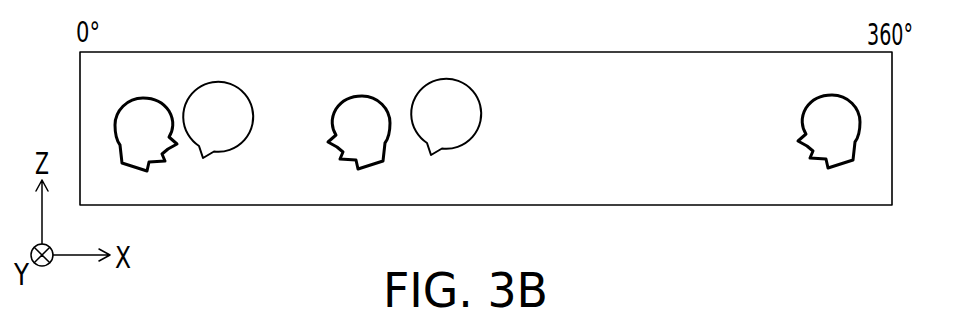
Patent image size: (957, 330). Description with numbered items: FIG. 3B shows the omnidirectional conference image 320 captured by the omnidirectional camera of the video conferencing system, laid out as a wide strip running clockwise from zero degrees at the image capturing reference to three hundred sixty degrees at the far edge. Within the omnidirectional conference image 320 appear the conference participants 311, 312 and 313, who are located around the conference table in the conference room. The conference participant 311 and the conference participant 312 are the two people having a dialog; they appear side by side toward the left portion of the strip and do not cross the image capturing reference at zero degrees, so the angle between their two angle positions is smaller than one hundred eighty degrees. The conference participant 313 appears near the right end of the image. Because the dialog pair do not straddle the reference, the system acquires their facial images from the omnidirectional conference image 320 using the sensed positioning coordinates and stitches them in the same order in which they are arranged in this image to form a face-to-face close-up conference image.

The conference participant 311 is at (145, 98).
The conference participant 312 is at (355, 95).
The conference participant 313 is at (832, 93).
The omnidirectional conference image 320 is at (823, 208).